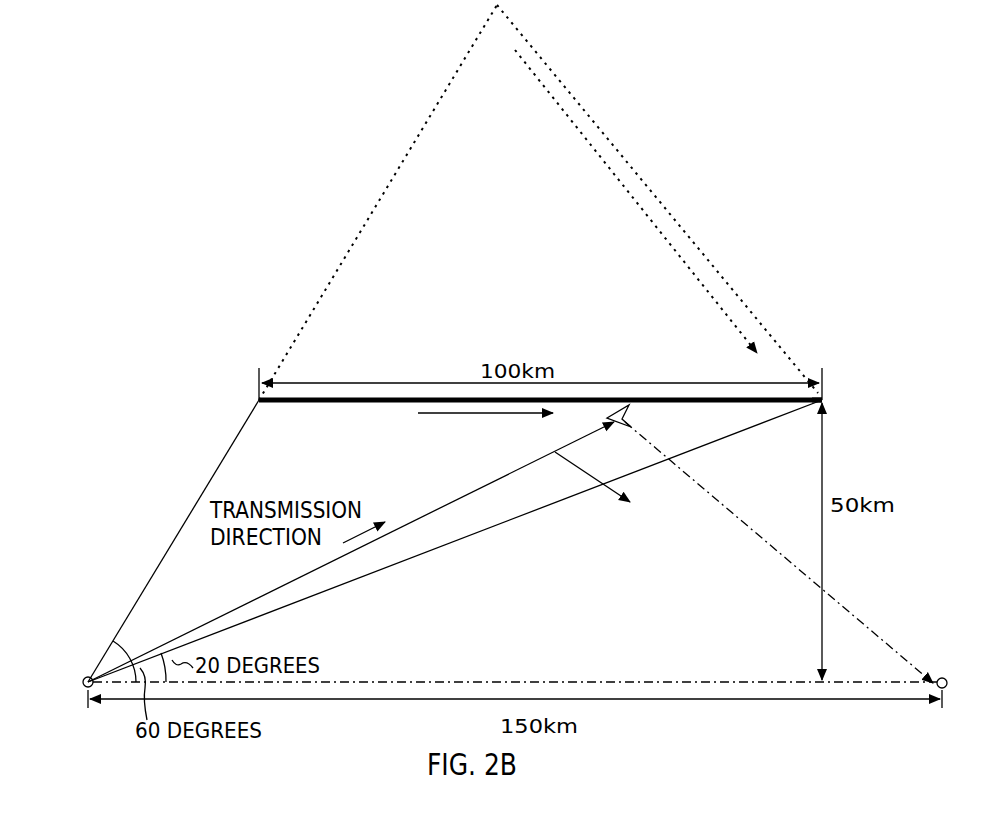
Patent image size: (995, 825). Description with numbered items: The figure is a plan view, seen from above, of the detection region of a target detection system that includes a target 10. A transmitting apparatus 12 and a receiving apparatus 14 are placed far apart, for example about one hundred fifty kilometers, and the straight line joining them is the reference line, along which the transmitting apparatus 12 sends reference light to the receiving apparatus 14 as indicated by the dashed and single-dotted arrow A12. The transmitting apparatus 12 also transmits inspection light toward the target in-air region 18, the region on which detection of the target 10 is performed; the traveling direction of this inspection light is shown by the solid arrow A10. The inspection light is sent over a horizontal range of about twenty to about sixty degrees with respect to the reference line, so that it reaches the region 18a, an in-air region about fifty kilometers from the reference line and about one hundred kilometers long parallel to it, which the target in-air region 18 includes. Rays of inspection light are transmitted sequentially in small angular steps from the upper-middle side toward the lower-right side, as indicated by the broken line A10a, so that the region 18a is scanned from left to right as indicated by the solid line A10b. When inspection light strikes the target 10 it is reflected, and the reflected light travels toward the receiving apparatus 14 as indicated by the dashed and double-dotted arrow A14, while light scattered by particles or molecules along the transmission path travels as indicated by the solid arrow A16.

The target 10 is at (616, 406).
The transmitting apparatus 12 is at (86, 677).
The receiving apparatus 14 is at (944, 678).
The target in-air region 18 is at (736, 430).
The region 18a is at (767, 398).
The solid arrow indicating traveling direction of inspection light A10 is at (428, 514).
The broken line indicating sequential transmission of inspection light A10a is at (645, 206).
The solid line indicating scanning direction of region A10b is at (471, 416).
The arrow indicating traveling direction of reference light A12 is at (527, 678).
The arrow indicating traveling direction of reflected light A14 is at (860, 608).
The solid arrow indicating traveling direction of scattered light A16 is at (566, 464).